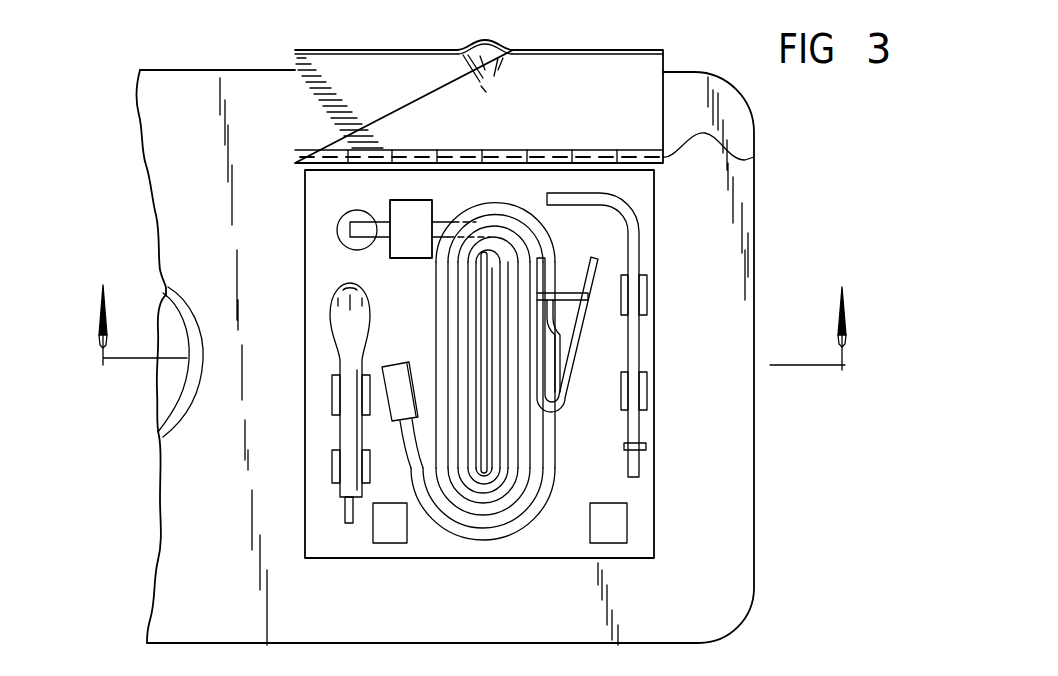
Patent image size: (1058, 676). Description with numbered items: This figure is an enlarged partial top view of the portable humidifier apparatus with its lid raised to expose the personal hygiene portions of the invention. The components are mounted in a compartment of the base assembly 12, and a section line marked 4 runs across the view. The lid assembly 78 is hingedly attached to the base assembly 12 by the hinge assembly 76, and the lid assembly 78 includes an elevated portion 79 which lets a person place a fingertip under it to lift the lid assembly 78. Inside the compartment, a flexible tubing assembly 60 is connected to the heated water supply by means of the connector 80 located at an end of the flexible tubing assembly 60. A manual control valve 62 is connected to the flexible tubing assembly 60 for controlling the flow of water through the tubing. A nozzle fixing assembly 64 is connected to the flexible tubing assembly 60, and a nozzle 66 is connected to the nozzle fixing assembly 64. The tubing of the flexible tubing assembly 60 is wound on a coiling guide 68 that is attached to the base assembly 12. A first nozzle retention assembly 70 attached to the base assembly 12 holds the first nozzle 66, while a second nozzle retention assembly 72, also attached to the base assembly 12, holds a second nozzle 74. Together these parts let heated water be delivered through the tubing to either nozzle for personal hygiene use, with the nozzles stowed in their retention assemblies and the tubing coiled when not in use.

The section line 4- 4 is at (475, 346).
The base assembly 12 is at (723, 470).
The flexible tubing assembly 60 is at (550, 468).
The manual control valve 62 is at (588, 335).
The nozzle fixing assembly 64 is at (406, 362).
The nozzle 66 is at (340, 345).
The coiling guide 68 is at (477, 440).
The first nozzle retention assembly 70 is at (332, 455).
The second nozzle retention assembly 72 is at (646, 392).
The second nozzle 74 is at (630, 218).
The hinge assembly 76 is at (650, 153).
The lid assembly 78 is at (622, 105).
The elevated portion 79 is at (487, 44).
The connector 80 is at (400, 222).